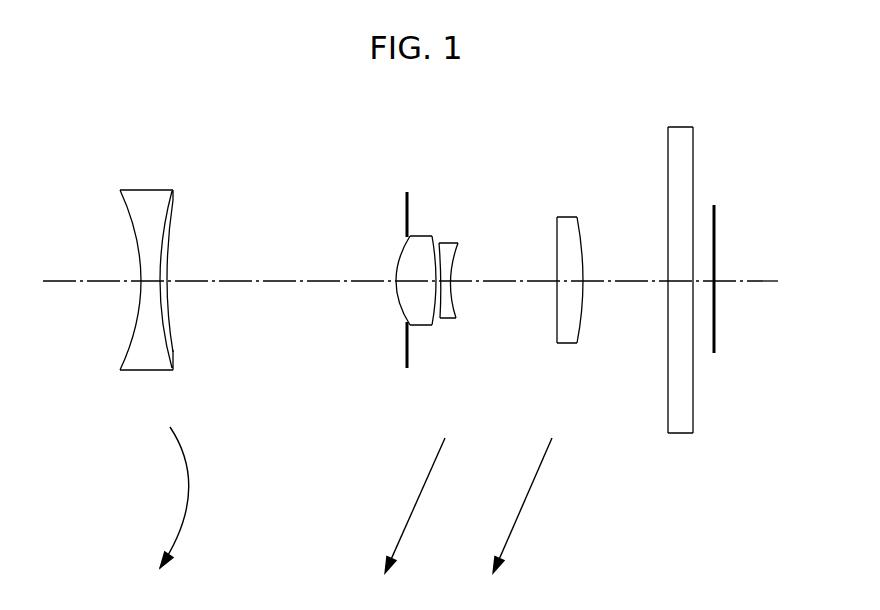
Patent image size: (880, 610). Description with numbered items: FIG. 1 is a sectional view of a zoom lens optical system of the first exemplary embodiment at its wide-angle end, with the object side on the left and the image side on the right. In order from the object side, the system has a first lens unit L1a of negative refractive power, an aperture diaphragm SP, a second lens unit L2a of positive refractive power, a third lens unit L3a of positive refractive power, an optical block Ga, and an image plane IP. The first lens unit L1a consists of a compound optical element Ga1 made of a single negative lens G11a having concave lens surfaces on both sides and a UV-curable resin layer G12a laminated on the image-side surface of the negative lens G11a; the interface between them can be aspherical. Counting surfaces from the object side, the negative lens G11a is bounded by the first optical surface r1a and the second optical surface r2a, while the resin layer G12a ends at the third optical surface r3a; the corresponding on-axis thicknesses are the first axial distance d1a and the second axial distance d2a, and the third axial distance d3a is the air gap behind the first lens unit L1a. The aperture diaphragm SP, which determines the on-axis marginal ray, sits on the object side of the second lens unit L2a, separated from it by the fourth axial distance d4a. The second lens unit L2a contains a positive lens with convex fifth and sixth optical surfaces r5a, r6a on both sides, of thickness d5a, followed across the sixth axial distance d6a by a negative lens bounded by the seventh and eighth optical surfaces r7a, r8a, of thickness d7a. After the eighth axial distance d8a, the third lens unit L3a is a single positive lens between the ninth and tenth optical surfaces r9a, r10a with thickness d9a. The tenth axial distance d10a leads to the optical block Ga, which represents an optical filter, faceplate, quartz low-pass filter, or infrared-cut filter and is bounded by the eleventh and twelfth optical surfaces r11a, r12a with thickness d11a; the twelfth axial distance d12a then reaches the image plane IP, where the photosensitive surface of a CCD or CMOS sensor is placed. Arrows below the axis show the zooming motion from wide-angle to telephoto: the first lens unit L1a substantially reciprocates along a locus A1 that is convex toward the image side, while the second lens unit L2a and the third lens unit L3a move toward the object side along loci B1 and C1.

The first lens unit L1a is at (75, 105).
The compound optical element Ga1 is at (193, 137).
The negative lens G11a is at (133, 194).
The UV-curable resin layer G12a is at (171, 197).
The first optical surface r1a is at (133, 241).
The second optical surface r2a is at (164, 244).
The third optical surface r3a is at (166, 272).
The first axial distance d1a is at (151, 290).
The second axial distance d2a is at (165, 304).
The third axial distance d3a is at (282, 284).
The aperture diaphragm SP is at (405, 220).
The second lens unit L2a is at (410, 150).
The fifth optical surface r5a is at (403, 255).
The sixth optical surface r6a is at (436, 243).
The seventh optical surface r7a is at (446, 243).
The eighth optical surface r8a is at (455, 257).
The fourth axial distance d4a is at (399, 323).
The fifth axial distance d5a is at (422, 283).
The sixth axial distance d6a is at (437, 284).
The seventh axial distance d7a is at (449, 285).
The eighth axial distance d8a is at (513, 284).
The third lens unit L3a is at (588, 150).
The ninth optical surface r9a is at (557, 230).
The tenth optical surface r10a is at (578, 230).
The ninth axial distance d9a is at (572, 284).
The tenth axial distance d10a is at (621, 284).
The eleventh axial distance d11a is at (680, 284).
The twelfth axial distance d12a is at (700, 284).
The optical block Ga is at (680, 132).
The eleventh optical surface r11a is at (667, 160).
The twelfth optical surface r12a is at (695, 165).
The image plane IP is at (716, 215).
The movement locus of first lens unit A1 is at (191, 497).
The movement locus of second lens unit B1 is at (422, 505).
The movement locus of third lens unit C1 is at (530, 505).